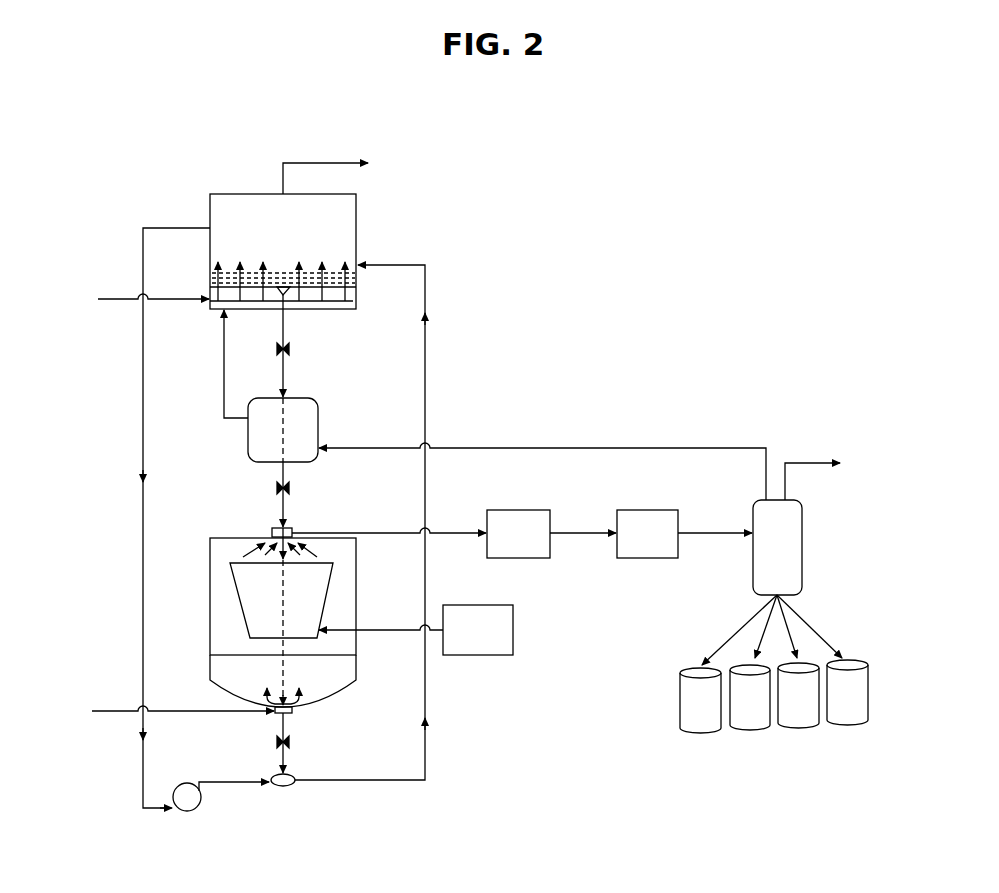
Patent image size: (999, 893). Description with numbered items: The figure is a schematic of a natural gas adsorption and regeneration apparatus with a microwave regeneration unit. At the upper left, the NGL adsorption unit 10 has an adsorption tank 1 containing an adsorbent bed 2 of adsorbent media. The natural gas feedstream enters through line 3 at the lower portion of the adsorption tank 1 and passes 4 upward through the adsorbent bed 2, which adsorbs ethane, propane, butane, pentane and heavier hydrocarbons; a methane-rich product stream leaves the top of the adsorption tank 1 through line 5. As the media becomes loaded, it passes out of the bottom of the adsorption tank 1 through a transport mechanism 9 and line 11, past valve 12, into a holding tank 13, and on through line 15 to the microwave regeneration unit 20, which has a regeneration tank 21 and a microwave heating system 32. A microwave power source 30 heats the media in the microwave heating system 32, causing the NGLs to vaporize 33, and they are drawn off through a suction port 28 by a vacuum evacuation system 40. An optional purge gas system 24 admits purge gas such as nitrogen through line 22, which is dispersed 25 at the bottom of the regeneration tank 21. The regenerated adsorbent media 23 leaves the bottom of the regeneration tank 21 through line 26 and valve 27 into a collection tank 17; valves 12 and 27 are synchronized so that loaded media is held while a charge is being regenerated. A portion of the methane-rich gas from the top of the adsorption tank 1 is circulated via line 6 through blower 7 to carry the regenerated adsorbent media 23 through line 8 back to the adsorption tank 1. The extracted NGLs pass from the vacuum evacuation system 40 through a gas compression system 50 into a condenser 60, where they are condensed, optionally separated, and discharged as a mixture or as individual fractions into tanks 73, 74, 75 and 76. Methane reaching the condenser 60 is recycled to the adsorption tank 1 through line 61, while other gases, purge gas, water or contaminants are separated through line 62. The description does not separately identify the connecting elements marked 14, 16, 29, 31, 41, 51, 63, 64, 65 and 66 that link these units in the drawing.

The adsorption tank 1 is at (208, 206).
The adsorbent bed 2 is at (280, 268).
The line 3 is at (113, 298).
The passage of feedstream through adsorbent bed 4 is at (218, 258).
The line 5 is at (310, 162).
The line 6 is at (143, 455).
The blower 7 is at (195, 810).
The line 8 is at (428, 382).
The transport mechanism 9 is at (297, 292).
The NGL adsorption unit 10 is at (266, 222).
The line 11 is at (286, 316).
The valve 12 is at (289, 350).
The holding tank 13 is at (320, 426).
The gas return line 14 is at (222, 378).
The line 15 is at (286, 470).
The valve 16 is at (290, 490).
The collection tank 17 is at (290, 787).
The microwave regeneration unit 20 is at (282, 644).
The regeneration tank 21 is at (210, 632).
The line 22 is at (113, 711).
The regenerated adsorbent media 23 is at (283, 672).
The purge gas system 24 is at (272, 715).
The dispersion of purge gas 25 is at (258, 690).
The line 26 is at (290, 725).
The valve 27 is at (290, 748).
The suction port 28 is at (270, 528).
The overflow line 29 is at (373, 530).
The microwave power source 30 is at (480, 658).
The control line 31 is at (370, 632).
The microwave heating system 32 is at (333, 596).
The vaporization of NGLs 33 is at (258, 554).
The vacuum evacuation system 40 is at (517, 560).
The transfer line 41 is at (570, 531).
The gas compression system 50 is at (643, 560).
The transfer line 51 is at (700, 531).
The condenser 60 is at (805, 560).
The line 61 is at (583, 448).
The line 62 is at (810, 463).
The distribution line 63 is at (703, 650).
The distribution line 64 is at (768, 610).
The distribution line 65 is at (800, 635).
The distribution line 66 is at (795, 642).
The tank 73 is at (693, 730).
The tank 74 is at (745, 728).
The tank 75 is at (795, 725).
The tank 76 is at (845, 722).